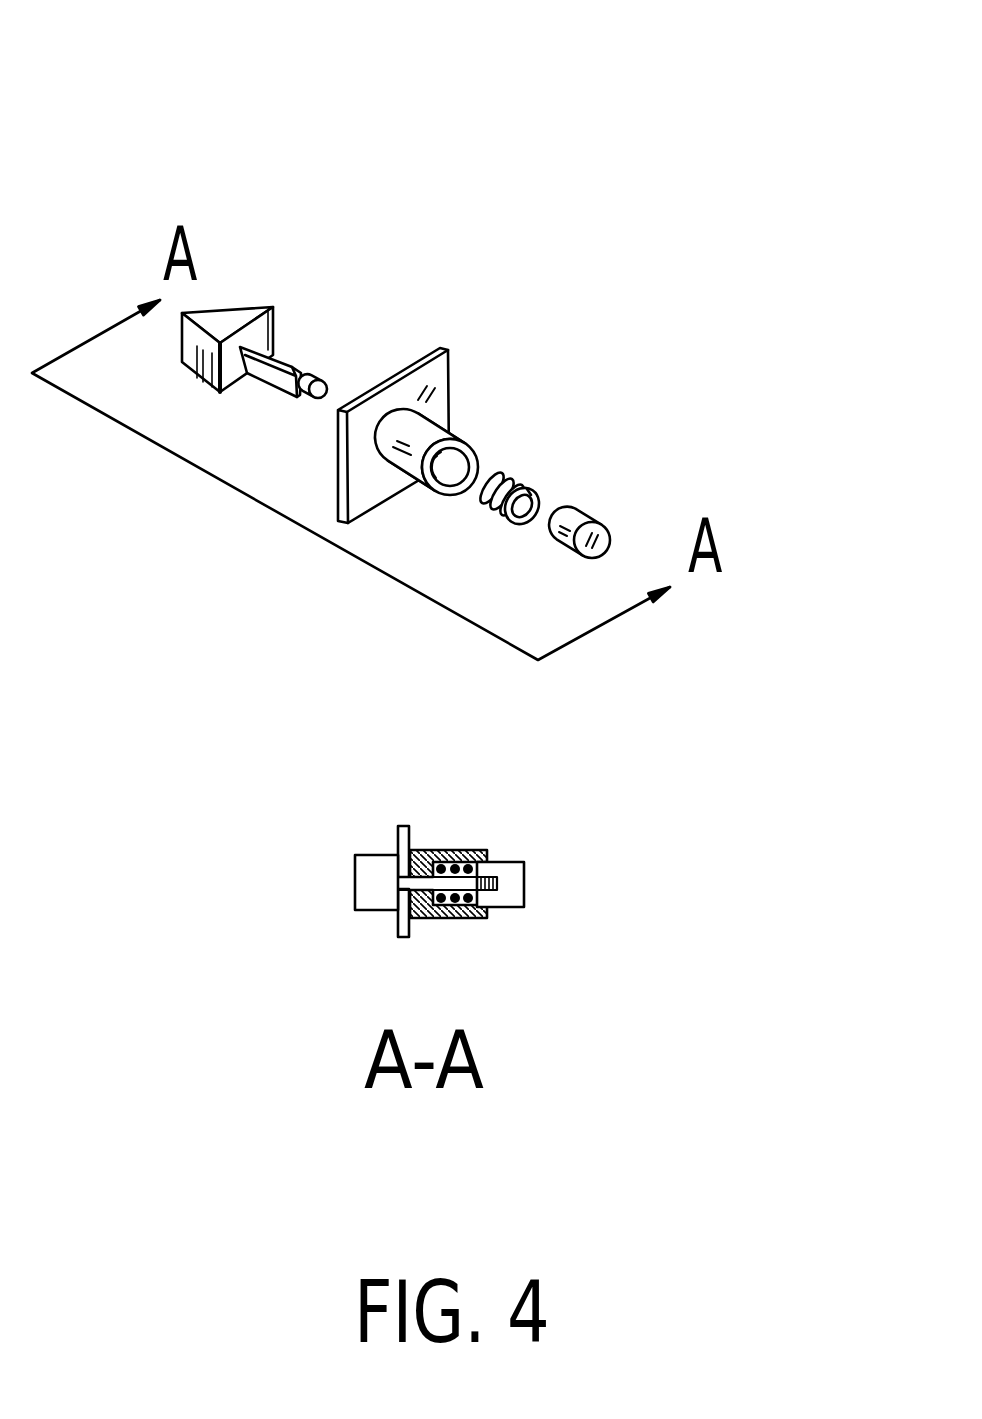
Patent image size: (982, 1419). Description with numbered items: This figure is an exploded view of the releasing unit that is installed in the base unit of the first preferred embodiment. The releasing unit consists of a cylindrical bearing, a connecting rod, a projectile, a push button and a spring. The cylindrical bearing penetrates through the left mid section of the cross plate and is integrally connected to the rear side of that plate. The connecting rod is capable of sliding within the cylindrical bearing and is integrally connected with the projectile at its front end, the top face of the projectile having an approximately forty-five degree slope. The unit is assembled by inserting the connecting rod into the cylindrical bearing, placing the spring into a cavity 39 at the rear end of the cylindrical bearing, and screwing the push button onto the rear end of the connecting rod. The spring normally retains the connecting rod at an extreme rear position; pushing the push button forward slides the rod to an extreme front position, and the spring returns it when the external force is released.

The cavity 39 is at (477, 455).